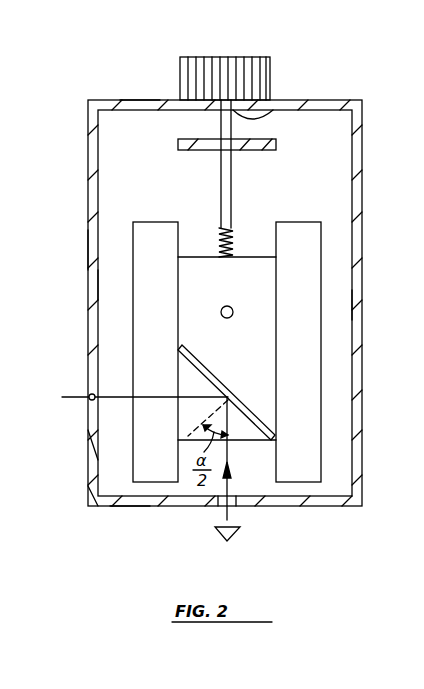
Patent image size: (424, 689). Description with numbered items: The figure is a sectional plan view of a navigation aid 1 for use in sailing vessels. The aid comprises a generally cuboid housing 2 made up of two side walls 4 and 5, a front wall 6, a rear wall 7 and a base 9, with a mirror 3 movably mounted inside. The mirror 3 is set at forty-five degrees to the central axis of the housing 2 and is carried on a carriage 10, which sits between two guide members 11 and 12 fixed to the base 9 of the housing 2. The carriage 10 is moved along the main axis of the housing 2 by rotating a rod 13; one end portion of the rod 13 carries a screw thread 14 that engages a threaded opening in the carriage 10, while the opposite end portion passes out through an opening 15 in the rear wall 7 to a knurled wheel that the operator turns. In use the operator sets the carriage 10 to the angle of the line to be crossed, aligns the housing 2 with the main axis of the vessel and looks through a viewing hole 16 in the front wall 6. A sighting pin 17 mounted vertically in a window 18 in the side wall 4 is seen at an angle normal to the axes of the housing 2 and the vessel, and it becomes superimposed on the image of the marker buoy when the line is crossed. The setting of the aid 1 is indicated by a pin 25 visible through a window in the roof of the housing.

The navigation aid 1 is at (366, 216).
The housing 2 is at (88, 250).
The mirror 3 is at (228, 384).
The side wall 4 is at (94, 286).
The side wall 5 is at (357, 306).
The front wall 6 is at (124, 504).
The rear wall 7 is at (141, 104).
The base 9 is at (100, 492).
The carriage 10 is at (263, 275).
The guide member 11 is at (160, 482).
The guide member 12 is at (297, 483).
The rod 13 is at (233, 188).
The screw thread 14 is at (233, 242).
The opening 15 is at (258, 112).
The viewing hole 16 is at (194, 60).
The sighting pin 17 is at (88, 395).
The window 18 is at (92, 443).
The pin 25 is at (221, 313).